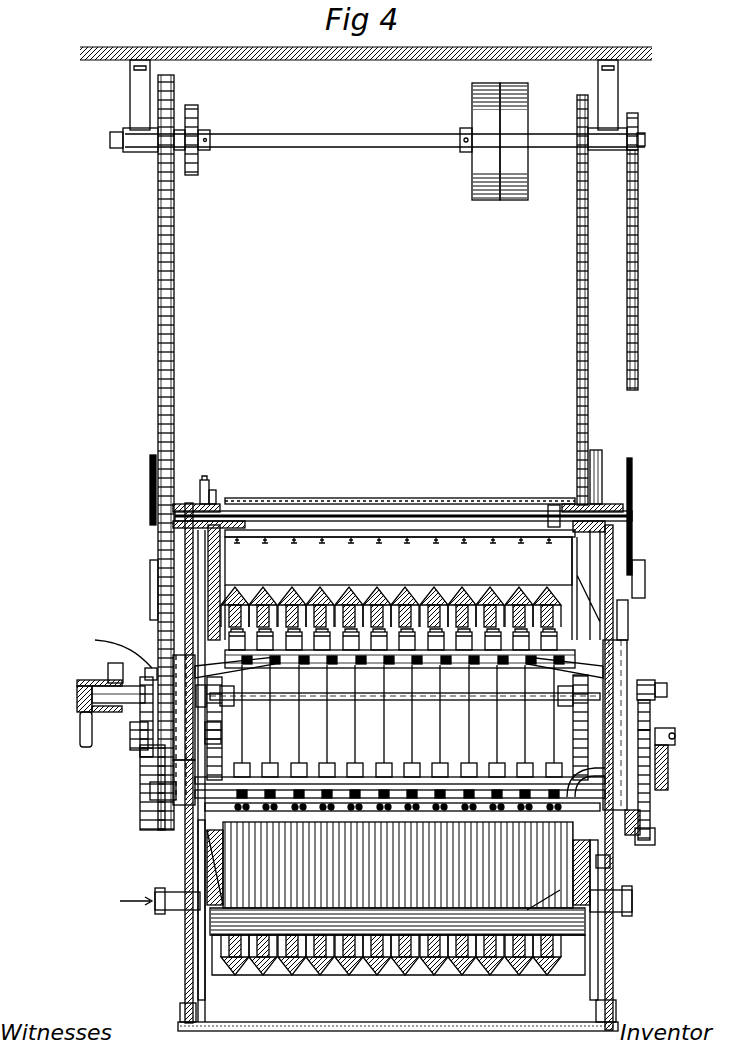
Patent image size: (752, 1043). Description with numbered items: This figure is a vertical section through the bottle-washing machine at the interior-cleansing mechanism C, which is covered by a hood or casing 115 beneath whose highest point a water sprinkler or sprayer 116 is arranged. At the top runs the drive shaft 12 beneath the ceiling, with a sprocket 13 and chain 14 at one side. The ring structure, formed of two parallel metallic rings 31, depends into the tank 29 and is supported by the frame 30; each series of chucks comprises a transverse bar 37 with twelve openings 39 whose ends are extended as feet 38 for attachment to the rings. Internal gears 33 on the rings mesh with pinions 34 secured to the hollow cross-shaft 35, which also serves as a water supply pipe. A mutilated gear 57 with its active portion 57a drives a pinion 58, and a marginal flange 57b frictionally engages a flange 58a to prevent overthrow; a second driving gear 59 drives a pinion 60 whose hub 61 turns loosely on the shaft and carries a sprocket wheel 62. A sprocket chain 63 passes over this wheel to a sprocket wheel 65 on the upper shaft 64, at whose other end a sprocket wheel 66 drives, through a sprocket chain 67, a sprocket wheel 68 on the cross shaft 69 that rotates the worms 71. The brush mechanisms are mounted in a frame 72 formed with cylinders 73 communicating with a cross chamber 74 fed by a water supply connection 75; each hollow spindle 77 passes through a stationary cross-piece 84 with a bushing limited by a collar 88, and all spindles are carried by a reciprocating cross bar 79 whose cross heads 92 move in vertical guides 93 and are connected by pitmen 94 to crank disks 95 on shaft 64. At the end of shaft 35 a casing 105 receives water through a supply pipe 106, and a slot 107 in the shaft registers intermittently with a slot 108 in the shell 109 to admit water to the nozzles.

The drive shaft 12 is at (281, 147).
The sprocket 13 is at (639, 130).
The chain 14 is at (638, 190).
The mechanism C is at (398, 480).
The hood or casing 115 is at (352, 500).
The shaft 64 is at (440, 511).
The sprocket chain 63 is at (204, 479).
The sprocket wheel 65 is at (215, 492).
The sprocket wheel 66 is at (600, 470).
The crank disks 95 is at (158, 484).
The water sprinkler or sprayer 116 is at (393, 550).
The openings 39 is at (380, 600).
The transverse bar 37 is at (405, 986).
The collar 88 is at (322, 652).
The stationary cross-piece 84 is at (402, 652).
The hollow spindle 77 is at (296, 733).
The cross-shaft 35 is at (370, 700).
The internal gears 33 is at (214, 740).
The pinions 34 is at (224, 706).
The hub 61 is at (196, 697).
The sprocket wheel 62 is at (222, 730).
The feet 38 is at (195, 670).
The slot 108 is at (107, 675).
The shell 109 is at (77, 686).
The casing 105 is at (92, 698).
The slot 107 is at (104, 712).
The supply pipe 106 is at (80, 729).
The pinion 60 is at (111, 651).
The vertical guides 93 is at (399, 725).
The cross heads 92 is at (150, 791).
The driving gear 59 is at (140, 826).
The cross bar 79 is at (397, 778).
The frame 72 is at (504, 790).
The worms 71 is at (462, 803).
The cross chamber 74 is at (397, 878).
The cylinders 73 is at (240, 842).
The water supply connection 75 is at (150, 906).
The tank 29 is at (613, 932).
The rings 31 is at (210, 975).
The frame 30 is at (196, 1010).
The pinion 58 is at (656, 684).
The flange 58a is at (667, 690).
The active or geared portion 57a is at (650, 716).
The mutilated gear 57 is at (675, 740).
The pitmen 94 is at (668, 765).
The marginal flange 57b is at (650, 800).
The cross shaft 69 is at (640, 820).
The sprocket wheel 68 is at (610, 862).
The sprocket chain 67 is at (630, 622).